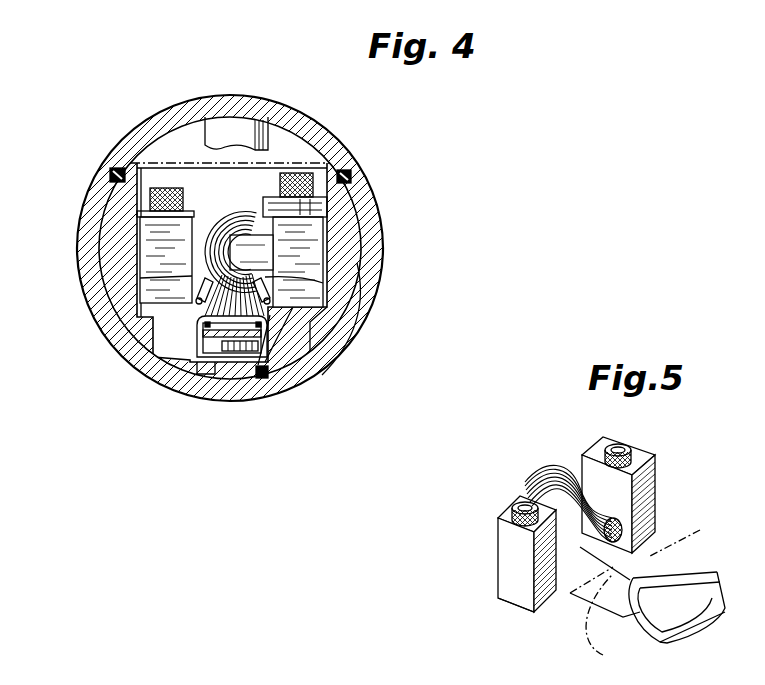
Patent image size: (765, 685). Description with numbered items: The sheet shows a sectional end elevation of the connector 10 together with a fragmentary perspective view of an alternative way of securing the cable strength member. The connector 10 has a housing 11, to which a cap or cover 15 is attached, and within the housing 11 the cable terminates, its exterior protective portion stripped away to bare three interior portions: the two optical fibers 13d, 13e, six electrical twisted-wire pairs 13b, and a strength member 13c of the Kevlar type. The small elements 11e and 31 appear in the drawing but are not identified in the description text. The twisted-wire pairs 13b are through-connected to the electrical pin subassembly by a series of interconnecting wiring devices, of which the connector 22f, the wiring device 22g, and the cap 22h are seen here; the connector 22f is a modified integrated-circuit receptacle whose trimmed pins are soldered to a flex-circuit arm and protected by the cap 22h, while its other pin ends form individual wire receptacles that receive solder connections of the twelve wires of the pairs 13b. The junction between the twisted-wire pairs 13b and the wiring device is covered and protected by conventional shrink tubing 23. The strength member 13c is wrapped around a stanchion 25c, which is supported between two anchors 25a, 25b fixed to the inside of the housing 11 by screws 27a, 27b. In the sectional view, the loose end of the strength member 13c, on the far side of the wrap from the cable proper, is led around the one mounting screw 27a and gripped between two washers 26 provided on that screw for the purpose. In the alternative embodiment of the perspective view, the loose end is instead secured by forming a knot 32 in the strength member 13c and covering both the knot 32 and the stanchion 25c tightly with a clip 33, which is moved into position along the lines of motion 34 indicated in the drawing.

In FIG. 4, the connector 10 is at (128, 100).
In FIG. 4, the housing 11 is at (350, 325).
In FIG. 4, the housing tab 11e is at (200, 375).
In FIG. 4, the electrical twisted-wire pairs 13b is at (322, 374).
In FIG. 4, the strength member 13c is at (252, 213).
In FIG. 5, the strength member 13c is at (535, 488).
In FIG. 4, the optical fiber 13d is at (323, 283).
In FIG. 4, the optical fiber 13e is at (140, 278).
In FIG. 4, the cap or cover 15 is at (238, 108).
In FIG. 4, the connector 22f is at (195, 330).
In FIG. 4, the interconnecting wiring device 22g is at (218, 362).
In FIG. 4, the cap 22h is at (240, 352).
In FIG. 4, the shrink tubing 23 is at (270, 380).
In FIG. 4, the anchor 25a is at (317, 262).
In FIG. 5, the anchor 25a is at (657, 476).
In FIG. 4, the anchor 25b is at (150, 242).
In FIG. 5, the anchor 25b is at (500, 550).
In FIG. 4, the stanchion 25c is at (200, 233).
In FIG. 5, the stanchion 25c is at (580, 600).
In FIG. 4, the washers 26 is at (282, 173).
In FIG. 4, the screw 27a is at (320, 163).
In FIG. 4, the screw 27b is at (137, 210).
In FIG. 4, the seal 31 is at (352, 174).
In FIG. 5, the knot 32 is at (573, 482).
In FIG. 5, the clip 33 is at (718, 591).
In FIG. 5, the lines of motion 34 is at (647, 595).